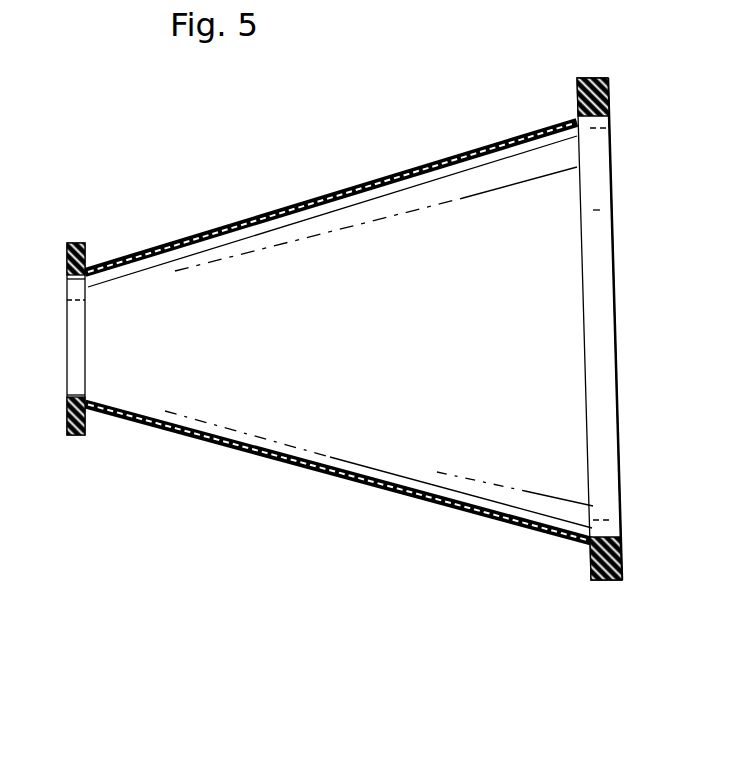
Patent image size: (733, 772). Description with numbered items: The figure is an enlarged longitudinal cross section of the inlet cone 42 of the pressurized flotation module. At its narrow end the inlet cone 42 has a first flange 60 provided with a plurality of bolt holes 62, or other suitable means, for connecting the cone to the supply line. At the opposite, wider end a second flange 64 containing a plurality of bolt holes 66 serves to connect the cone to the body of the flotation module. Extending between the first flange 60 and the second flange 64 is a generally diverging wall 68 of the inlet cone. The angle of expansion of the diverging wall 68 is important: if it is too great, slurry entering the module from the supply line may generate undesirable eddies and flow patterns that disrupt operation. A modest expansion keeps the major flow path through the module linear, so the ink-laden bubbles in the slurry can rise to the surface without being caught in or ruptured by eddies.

The inlet cone 42 is at (262, 207).
The first flange 60 is at (76, 243).
The bolt holes 62 is at (67, 258).
The second flange 64 is at (581, 78).
The bolt holes 66 is at (609, 96).
The diverging wall 68 is at (355, 480).